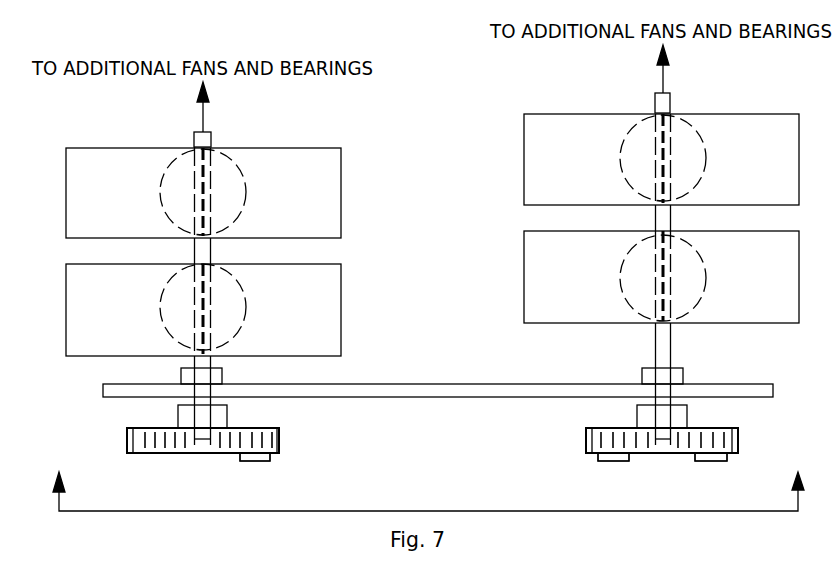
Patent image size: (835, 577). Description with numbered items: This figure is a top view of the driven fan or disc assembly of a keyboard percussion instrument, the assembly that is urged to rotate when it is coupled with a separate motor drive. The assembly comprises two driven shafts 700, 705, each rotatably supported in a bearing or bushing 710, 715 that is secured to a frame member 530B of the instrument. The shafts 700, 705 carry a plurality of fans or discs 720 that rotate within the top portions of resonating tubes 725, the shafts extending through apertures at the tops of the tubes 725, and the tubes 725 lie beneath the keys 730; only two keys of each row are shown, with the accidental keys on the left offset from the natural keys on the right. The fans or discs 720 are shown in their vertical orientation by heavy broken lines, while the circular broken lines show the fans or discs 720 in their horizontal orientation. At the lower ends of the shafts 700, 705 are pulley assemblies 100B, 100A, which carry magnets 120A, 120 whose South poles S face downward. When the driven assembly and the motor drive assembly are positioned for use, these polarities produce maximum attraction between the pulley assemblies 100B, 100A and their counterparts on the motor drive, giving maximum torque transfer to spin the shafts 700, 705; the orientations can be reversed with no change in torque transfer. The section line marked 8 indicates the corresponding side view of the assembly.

The shaft 700 is at (214, 134).
The shaft 705 is at (672, 99).
The bearing or bushing 710 is at (222, 372).
The bearing or bushing 715 is at (642, 370).
The fan or disc 720 is at (203, 178).
The resonating tube 725 is at (183, 152).
The key 730 is at (341, 190).
The frame member 530B is at (103, 391).
The pulley assembly 100A is at (586, 438).
The pulley assembly 100B is at (279, 438).
The magnet 120 is at (599, 460).
The magnet 120A is at (270, 462).
The South pole S is at (255, 461).
The section line for side view 8 is at (428, 479).